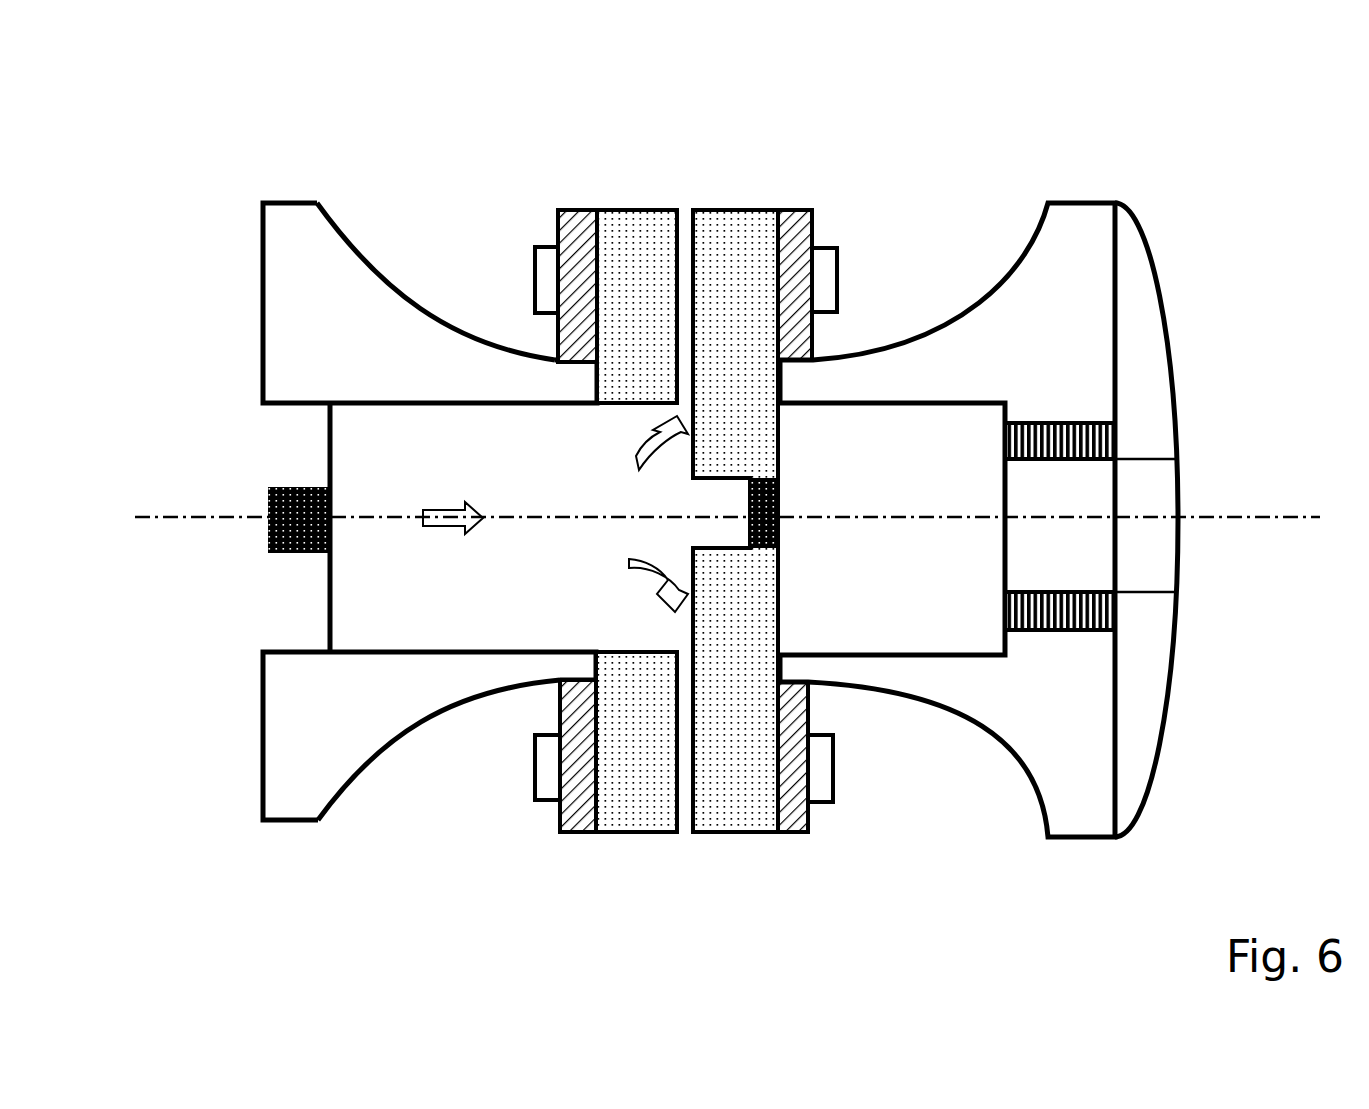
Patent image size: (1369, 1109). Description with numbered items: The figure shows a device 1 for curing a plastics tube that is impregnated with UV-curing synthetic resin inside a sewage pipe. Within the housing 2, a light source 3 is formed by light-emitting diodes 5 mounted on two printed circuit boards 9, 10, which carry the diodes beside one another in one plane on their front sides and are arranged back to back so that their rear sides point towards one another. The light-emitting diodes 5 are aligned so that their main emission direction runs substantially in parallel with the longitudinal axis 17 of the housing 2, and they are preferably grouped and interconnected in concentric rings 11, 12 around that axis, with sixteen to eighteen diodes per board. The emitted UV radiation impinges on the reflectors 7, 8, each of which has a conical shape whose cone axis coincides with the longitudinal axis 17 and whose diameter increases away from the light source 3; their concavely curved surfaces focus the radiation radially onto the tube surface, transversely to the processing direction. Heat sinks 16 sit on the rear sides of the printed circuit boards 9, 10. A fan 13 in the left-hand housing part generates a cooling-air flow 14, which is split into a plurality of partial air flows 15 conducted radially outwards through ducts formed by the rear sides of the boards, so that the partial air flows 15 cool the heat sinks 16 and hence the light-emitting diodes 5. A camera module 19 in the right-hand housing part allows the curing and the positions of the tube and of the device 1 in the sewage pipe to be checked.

The device 1 is at (128, 142).
The housing 2 is at (295, 190).
The light source 3 is at (528, 208).
The light-emitting diodes 5 is at (550, 254).
The reflector 7 is at (990, 278).
The reflector 8 is at (356, 240).
The printed circuit board 9 is at (795, 255).
The printed circuit board 10 is at (565, 329).
The concentric ring 11 is at (844, 234).
The concentric ring 12 is at (526, 814).
The fan 13 is at (293, 592).
The cooling-air flow 14 is at (443, 540).
The partial air flows 15 is at (657, 478).
The heat sinks 16 is at (727, 259).
The longitudinal axis 17 is at (219, 531).
The camera module 19 is at (1096, 544).